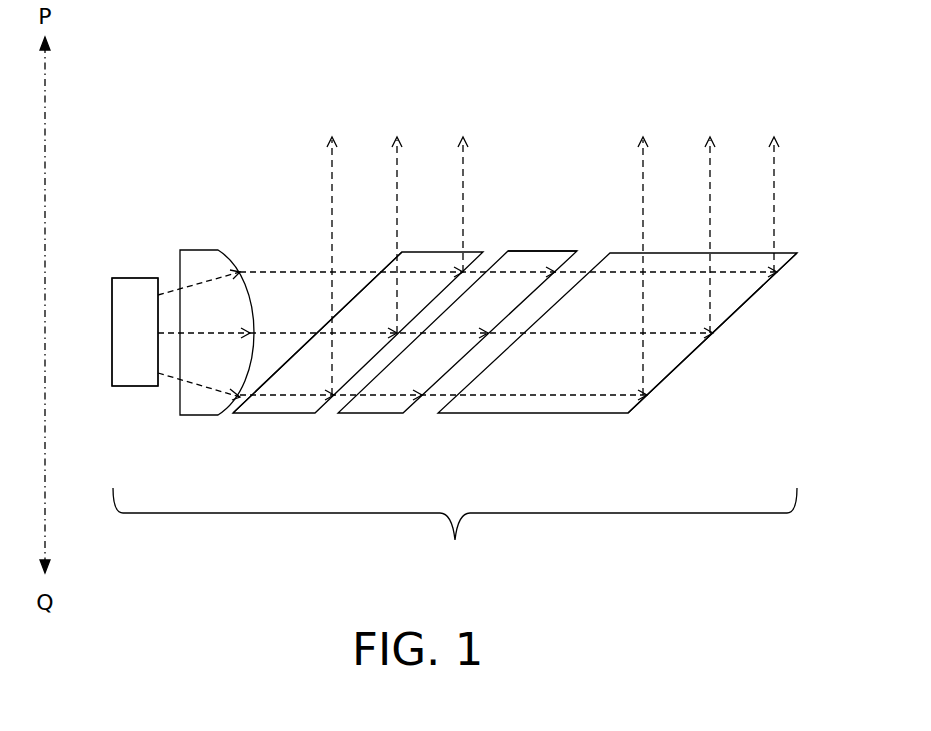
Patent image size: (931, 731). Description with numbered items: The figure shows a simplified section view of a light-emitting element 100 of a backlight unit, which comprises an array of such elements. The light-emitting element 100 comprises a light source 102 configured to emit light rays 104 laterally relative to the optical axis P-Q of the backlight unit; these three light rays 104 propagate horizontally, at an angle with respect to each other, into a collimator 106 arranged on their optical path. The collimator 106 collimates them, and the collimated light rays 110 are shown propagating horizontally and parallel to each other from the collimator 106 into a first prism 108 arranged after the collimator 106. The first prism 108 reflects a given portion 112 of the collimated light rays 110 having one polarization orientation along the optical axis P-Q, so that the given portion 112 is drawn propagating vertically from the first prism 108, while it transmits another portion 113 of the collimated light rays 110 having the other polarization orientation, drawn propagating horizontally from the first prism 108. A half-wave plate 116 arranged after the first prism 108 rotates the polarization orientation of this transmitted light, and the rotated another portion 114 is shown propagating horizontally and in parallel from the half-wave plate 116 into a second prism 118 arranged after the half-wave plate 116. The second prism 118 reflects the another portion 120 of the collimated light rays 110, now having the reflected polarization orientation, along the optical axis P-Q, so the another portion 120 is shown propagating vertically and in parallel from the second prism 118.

The light-emitting element 100 is at (455, 528).
The light source 102 is at (135, 332).
The light rays 104 is at (143, 382).
The collimator 106 is at (203, 292).
The first prism 108 is at (358, 375).
The collimated light rays 110 is at (317, 369).
The given portion of the collimated light rays 112 is at (397, 238).
The another portion of the collimated light rays 113 is at (457, 366).
The another portion of the collimated light rays 114 is at (617, 367).
The half-wave plate 116 is at (542, 172).
The second prism 118 is at (738, 333).
The another portion of the collimated light rays 120 is at (738, 244).